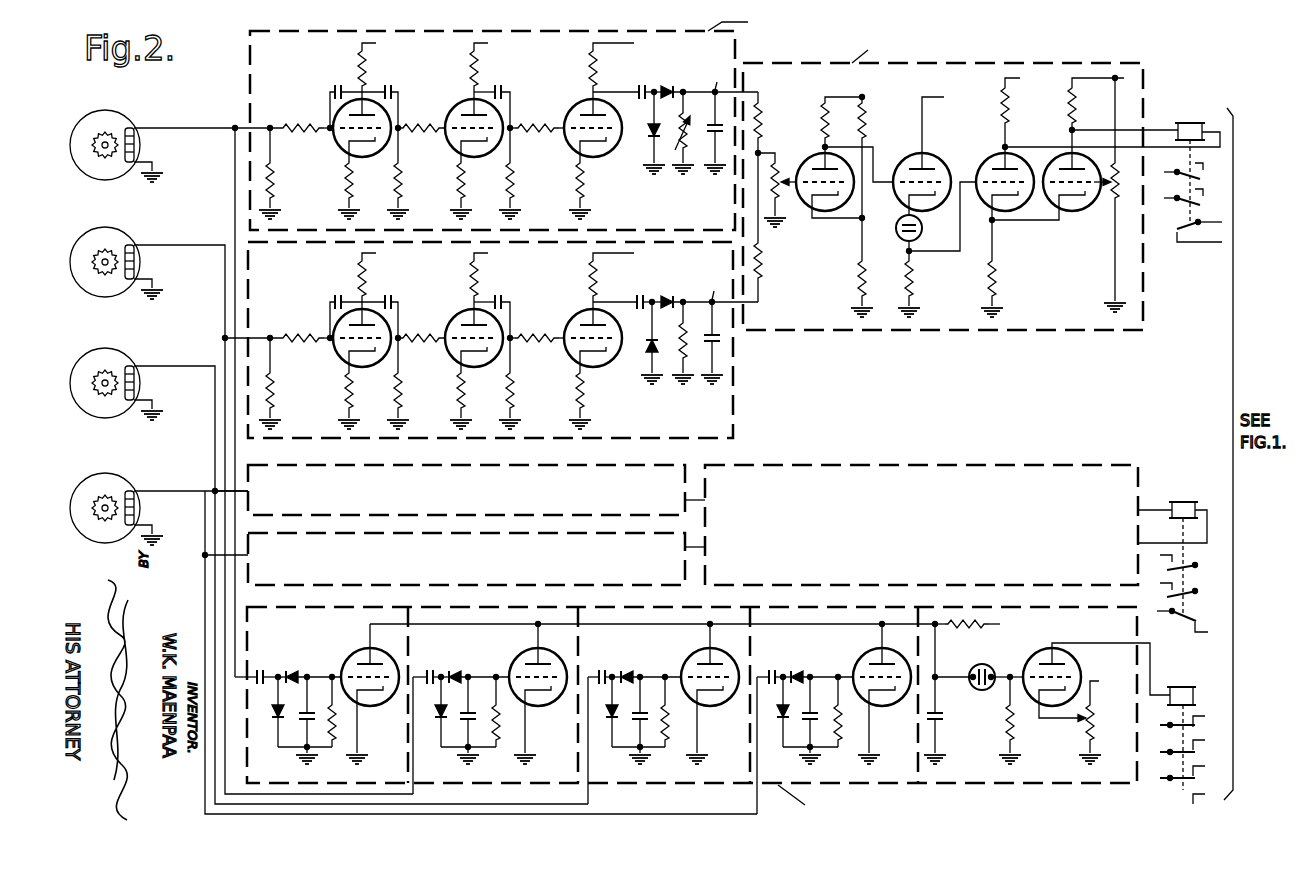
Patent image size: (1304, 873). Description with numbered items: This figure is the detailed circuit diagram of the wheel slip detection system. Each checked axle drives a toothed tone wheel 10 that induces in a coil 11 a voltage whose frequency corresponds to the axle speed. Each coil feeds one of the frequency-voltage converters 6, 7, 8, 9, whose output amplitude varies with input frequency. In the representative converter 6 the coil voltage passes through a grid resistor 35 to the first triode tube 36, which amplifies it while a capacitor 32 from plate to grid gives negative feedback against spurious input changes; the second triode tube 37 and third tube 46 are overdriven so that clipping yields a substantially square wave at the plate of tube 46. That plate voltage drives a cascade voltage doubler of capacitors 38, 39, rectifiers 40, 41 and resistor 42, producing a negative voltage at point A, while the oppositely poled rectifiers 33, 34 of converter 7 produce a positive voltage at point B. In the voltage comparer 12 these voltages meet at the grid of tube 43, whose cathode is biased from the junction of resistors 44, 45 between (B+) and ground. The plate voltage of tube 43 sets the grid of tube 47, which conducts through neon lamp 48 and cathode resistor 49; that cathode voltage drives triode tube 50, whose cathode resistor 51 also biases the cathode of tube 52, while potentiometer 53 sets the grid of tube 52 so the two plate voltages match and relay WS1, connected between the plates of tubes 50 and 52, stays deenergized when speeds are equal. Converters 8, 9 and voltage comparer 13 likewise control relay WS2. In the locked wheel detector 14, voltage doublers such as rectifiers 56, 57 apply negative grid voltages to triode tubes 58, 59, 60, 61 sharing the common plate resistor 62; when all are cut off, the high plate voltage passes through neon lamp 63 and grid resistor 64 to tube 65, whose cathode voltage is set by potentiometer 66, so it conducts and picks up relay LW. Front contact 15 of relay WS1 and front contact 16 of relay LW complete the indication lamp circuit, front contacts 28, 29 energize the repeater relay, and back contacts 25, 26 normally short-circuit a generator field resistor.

The frequency-voltage converter 6 is at (606, 34).
The frequency-voltage converter 7 is at (478, 440).
The frequency-voltage converter 8 is at (612, 465).
The frequency-voltage converter 9 is at (585, 585).
The tone wheel 10 is at (103, 158).
The coil 11 is at (135, 145).
The voltage comparer 12 is at (765, 63).
The voltage comparer 13 is at (1020, 465).
The locked wheel detector 14 is at (905, 607).
The front contact of relay WS1 15 is at (1186, 172).
The front contact of relay LW 16 is at (1170, 727).
The back contact of relay WS1 25 is at (1200, 232).
The back contact of relay WS2 26 is at (1182, 618).
The front contact of relay WS1 28 is at (1186, 198).
The front contact of relay WS2 29 is at (1196, 586).
The capacitor 32 is at (338, 88).
The rectifier 33 is at (668, 299).
The rectifier 34 is at (650, 348).
The grid resistor 35 is at (300, 123).
The triode tube 36 is at (350, 160).
The triode tube 37 is at (462, 160).
The capacitor 38 is at (643, 86).
The capacitor 39 is at (709, 133).
The rectifier 40 is at (651, 142).
The rectifier 41 is at (670, 90).
The resistor 42 is at (690, 126).
The tube 43 is at (812, 216).
The resistor 44 is at (868, 126).
The resistor 45 is at (856, 276).
The triode tube 46 is at (572, 152).
The tube 47 is at (928, 156).
The neon lamp 48 is at (923, 226).
The cathode resistor 49 is at (916, 280).
The triode tube 50 is at (1003, 213).
The cathode resistor 51 is at (998, 282).
The tube 52 is at (1095, 153).
The potentiometer 53 is at (1113, 190).
The rectifier 56 is at (294, 673).
The rectifier 57 is at (276, 719).
The triode tube 58 is at (352, 660).
The triode tube 59 is at (522, 659).
The triode tube 60 is at (697, 659).
The triode tube 61 is at (868, 659).
The common plate resistor 62 is at (976, 630).
The neon lamp 63 is at (980, 690).
The grid resistor 64 is at (1003, 730).
The tube 65 is at (1075, 667).
The potentiometer 66 is at (1095, 721).
The wheel slip detection relay WS1 is at (1190, 122).
The wheel slip detection relay WS2 is at (1183, 500).
The locked wheel relay LW is at (1183, 686).